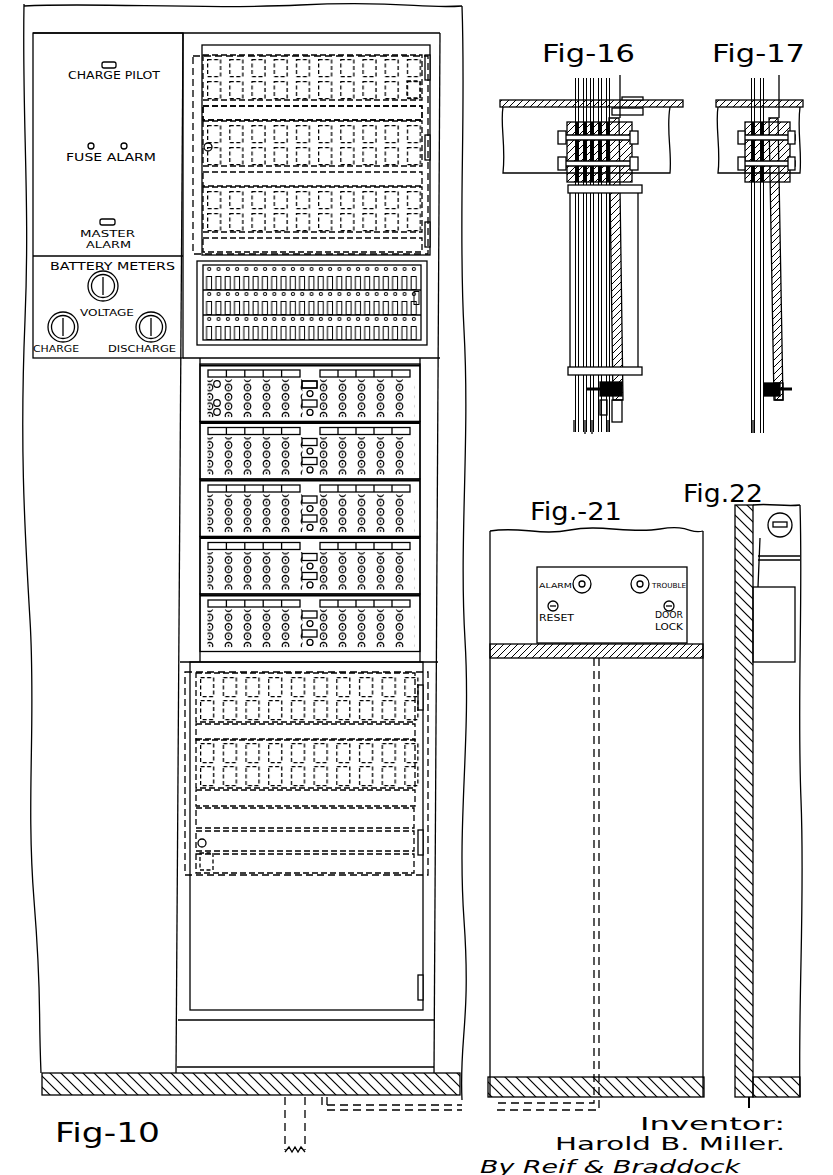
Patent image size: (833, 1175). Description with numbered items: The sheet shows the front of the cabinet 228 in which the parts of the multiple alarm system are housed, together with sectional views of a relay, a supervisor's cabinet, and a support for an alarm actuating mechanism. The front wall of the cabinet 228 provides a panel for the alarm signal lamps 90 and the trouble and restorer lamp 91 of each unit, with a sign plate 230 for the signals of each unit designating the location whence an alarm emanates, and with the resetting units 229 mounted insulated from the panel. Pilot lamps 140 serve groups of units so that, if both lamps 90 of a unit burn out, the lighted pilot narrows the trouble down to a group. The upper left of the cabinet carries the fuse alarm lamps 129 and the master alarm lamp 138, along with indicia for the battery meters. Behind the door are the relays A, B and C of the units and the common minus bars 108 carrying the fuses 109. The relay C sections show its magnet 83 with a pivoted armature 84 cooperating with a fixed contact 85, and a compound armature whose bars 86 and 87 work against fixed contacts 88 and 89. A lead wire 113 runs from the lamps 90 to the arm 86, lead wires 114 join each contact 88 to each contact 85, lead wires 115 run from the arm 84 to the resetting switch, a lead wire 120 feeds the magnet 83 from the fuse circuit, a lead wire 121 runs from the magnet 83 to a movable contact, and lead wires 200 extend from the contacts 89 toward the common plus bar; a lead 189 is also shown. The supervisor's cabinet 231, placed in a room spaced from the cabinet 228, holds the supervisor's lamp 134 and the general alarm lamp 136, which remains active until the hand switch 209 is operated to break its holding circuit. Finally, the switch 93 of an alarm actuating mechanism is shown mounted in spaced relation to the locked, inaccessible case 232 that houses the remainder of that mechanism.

In FIG. 10, the fuse alarm lamps 129 is at (122, 143).
In FIG. 10, the master alarm lamp 138 is at (106, 219).
In FIG. 10, the relay A is at (394, 73).
In FIG. 10, the relay B is at (415, 92).
In FIG. 10, the relay C is at (420, 113).
In FIG. 16, the relay C is at (630, 335).
In FIG. 10, the fuses 109 is at (418, 293).
In FIG. 10, the common minus bars 108 is at (420, 308).
In FIG. 10, the sign plates 230 is at (410, 375).
In FIG. 10, the units 229 is at (403, 462).
In FIG. 10, the alarm signal lamps 90 is at (215, 393).
In FIG. 10, the trouble and restorer lamp 91 is at (215, 412).
In FIG. 10, the pilot lamps 140 is at (207, 428).
In FIG. 10, the cabinet 228 is at (213, 973).
In FIG. 16, the conductor 189 is at (577, 78).
In FIG. 16, the lead wires 200 is at (572, 90).
In FIG. 16, the lead wires 114 is at (593, 80).
In FIG. 17, the lead wires 114 is at (752, 90).
In FIG. 16, the lead wire 113 is at (608, 78).
In FIG. 16, the lead wire 120 is at (622, 85).
In FIG. 16, the magnet 83 is at (630, 287).
In FIG. 16, the fixed contact 89 is at (575, 428).
In FIG. 16, the bar 87 is at (585, 433).
In FIG. 16, the fixed contact 88 is at (595, 435).
In FIG. 16, the bar 86 is at (610, 432).
In FIG. 17, the lead wires 115 is at (755, 78).
In FIG. 17, the lead wire 121 is at (781, 88).
In FIG. 17, the fixed contact 85 is at (752, 430).
In FIG. 17, the pivoted armature 84 is at (780, 382).
In FIG. 21, the supervisor's general alarm lamp 136 is at (580, 578).
In FIG. 21, the supervisor's lamp 134 is at (640, 578).
In FIG. 21, the hand switch 209 is at (548, 606).
In FIG. 21, the supervisor's cabinet 231 is at (553, 634).
In FIG. 22, the switch 93 is at (780, 513).
In FIG. 22, the case 232 is at (778, 653).